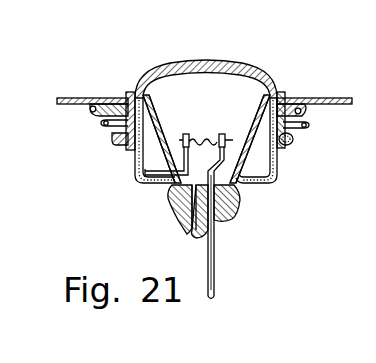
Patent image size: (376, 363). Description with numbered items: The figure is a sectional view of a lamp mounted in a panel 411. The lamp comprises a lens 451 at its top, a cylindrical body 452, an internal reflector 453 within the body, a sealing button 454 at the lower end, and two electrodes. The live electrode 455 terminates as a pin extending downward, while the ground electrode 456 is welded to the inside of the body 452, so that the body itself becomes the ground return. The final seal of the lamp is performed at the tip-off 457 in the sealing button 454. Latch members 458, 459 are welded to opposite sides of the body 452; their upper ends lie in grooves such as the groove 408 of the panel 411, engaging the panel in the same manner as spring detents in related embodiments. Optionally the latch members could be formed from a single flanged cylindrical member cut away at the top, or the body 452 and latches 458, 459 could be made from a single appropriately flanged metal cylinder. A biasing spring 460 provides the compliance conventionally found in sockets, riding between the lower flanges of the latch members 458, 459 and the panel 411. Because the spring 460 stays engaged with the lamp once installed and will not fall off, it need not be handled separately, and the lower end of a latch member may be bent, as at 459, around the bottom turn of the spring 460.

The groove 408 is at (106, 98).
The panel 411 is at (58, 98).
The lens 451 is at (184, 60).
The cylindrical body 452 is at (132, 163).
The internal reflector 453 is at (272, 170).
The sealing button 454 is at (238, 213).
The live electrode 455 is at (215, 256).
The ground electrode 456 is at (165, 192).
The tip-off 457 is at (185, 232).
The latch member 458 is at (124, 145).
The latch member 459 is at (291, 142).
The biasing spring 460 is at (310, 126).